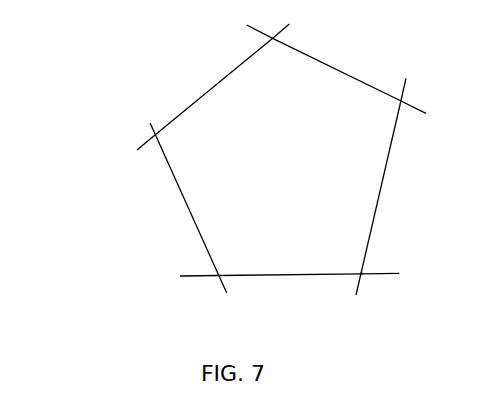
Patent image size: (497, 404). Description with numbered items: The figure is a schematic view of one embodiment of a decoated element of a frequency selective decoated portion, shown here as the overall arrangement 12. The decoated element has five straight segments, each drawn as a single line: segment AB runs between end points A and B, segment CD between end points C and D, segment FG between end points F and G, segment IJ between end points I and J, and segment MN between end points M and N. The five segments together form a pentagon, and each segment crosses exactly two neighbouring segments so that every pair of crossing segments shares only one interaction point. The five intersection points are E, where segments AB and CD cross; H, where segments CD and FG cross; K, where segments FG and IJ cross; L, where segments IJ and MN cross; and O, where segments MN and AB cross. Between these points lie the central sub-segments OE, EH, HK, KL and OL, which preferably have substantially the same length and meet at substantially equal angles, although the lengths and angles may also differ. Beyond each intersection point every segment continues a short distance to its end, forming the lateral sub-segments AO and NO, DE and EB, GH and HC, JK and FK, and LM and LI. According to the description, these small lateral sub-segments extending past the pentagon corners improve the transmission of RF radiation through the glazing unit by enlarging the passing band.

The pentagonal figure formed by intersecting lines 12 is at (101, 52).
The end point of segment AB A is at (228, 301).
The end point of segment AB B is at (204, 86).
The end point of segment CD C is at (292, 26).
The end point of segment CD D is at (132, 153).
The intersection point E is at (188, 205).
The end point of segment FG F is at (425, 119).
The end point of segment FG G is at (248, 24).
The intersection point H is at (335, 69).
The end point of segment IJ I is at (357, 299).
The end point of segment IJ J is at (410, 78).
The intersection point K is at (381, 187).
The intersection point L is at (354, 262).
The end point of segment MN M is at (392, 274).
The end point of segment MN N is at (184, 277).
The intersection point O is at (291, 261).